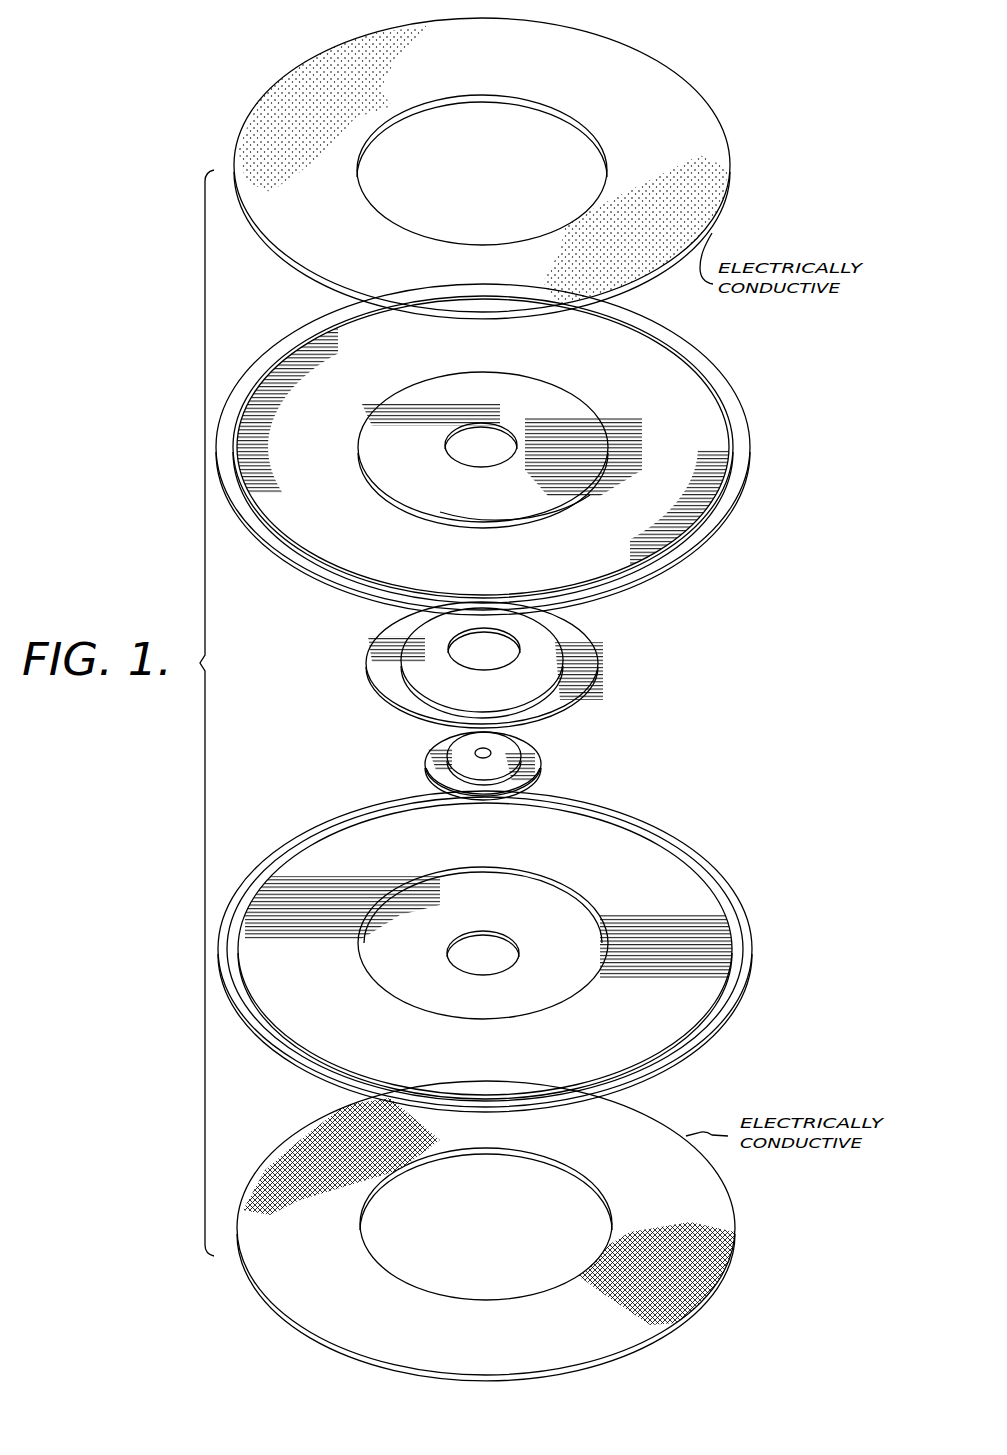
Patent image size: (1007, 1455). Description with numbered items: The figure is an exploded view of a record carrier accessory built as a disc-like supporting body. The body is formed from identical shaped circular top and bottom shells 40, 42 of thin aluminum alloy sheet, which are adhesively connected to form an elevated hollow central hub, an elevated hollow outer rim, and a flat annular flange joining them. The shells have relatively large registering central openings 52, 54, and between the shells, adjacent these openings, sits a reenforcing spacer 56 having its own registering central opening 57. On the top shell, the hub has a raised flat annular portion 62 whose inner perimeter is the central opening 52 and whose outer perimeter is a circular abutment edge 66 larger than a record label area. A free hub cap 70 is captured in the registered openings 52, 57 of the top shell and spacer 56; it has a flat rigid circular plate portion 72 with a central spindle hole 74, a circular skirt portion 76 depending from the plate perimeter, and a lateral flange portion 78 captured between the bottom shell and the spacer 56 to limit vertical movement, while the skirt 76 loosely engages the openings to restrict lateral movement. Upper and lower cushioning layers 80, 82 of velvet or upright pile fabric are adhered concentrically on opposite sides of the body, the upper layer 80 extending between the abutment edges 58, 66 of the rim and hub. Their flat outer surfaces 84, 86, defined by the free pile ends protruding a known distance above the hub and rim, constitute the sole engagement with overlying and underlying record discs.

The top shell 40 is at (267, 353).
The bottom shell 42 is at (292, 833).
The central opening of top shell 52 is at (489, 424).
The central opening of bottom shell 54 is at (481, 933).
The reenforcing spacer 56 is at (373, 632).
The central opening of spacer 57 is at (497, 617).
The abutment edge of rim 58 is at (315, 337).
The raised top flat annular portion 62 is at (367, 440).
The abutment edge of hub 66 is at (550, 508).
The hub cap 70 is at (418, 759).
The plate portion 72 is at (457, 743).
The spindle hole 74 is at (507, 747).
The skirt portion 76 is at (517, 773).
The flange portion 78 is at (537, 756).
The upper cushioning layer 80 is at (252, 110).
The lower cushioning layer 82 is at (288, 1135).
The outer surface of upper layer 84 is at (302, 73).
The outer surface of lower layer 86 is at (673, 1320).